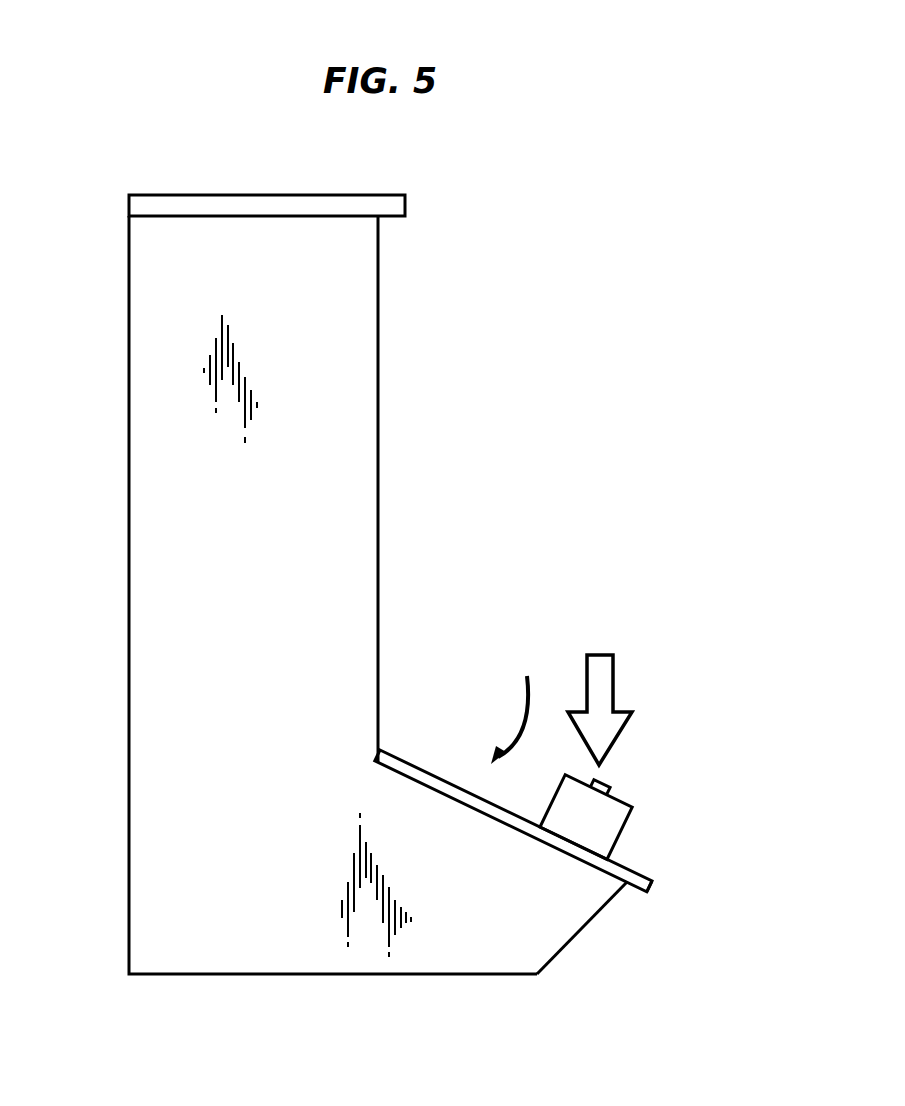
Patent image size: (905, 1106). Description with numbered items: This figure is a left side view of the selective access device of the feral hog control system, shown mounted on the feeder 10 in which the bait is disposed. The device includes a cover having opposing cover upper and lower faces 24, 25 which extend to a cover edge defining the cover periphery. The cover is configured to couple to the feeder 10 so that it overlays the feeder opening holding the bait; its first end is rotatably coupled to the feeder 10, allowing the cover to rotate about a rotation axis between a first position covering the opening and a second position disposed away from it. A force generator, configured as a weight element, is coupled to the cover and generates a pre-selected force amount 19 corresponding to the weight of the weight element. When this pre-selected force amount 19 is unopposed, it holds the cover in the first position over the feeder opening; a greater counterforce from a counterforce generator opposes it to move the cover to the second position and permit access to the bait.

The feeder 10 is at (198, 494).
The cover upper face 24 is at (433, 775).
The cover lower face 25 is at (497, 819).
The pre-selected force amount 19 is at (600, 710).